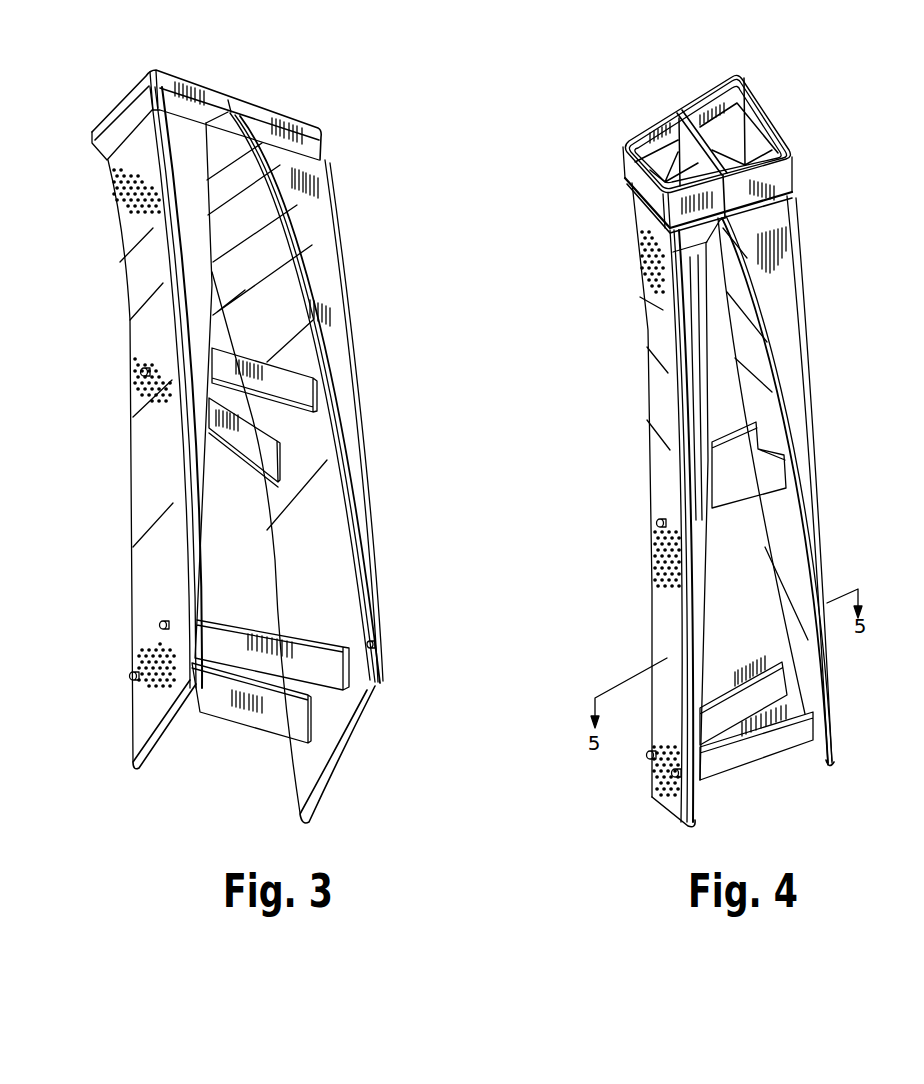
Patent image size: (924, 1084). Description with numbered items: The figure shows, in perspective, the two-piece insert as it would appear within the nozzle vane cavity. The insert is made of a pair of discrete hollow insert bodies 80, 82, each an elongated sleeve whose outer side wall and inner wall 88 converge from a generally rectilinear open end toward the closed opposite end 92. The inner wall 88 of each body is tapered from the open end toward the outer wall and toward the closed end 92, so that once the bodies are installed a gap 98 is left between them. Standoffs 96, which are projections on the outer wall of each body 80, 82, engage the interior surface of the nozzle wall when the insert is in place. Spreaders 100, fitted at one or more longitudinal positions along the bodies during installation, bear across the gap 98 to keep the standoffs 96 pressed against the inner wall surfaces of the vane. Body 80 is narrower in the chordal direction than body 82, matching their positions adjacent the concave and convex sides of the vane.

In FIG. 3, the insert body 80 is at (145, 326).
In FIG. 4, the insert body 80 is at (652, 332).
In FIG. 3, the insert body 82 is at (325, 258).
In FIG. 4, the insert body 82 is at (783, 318).
In FIG. 3, the inner wall 88 is at (325, 492).
In FIG. 4, the inner wall 88 is at (771, 517).
In FIG. 3, the closed opposite end 92 is at (352, 735).
In FIG. 4, the closed opposite end 92 is at (663, 805).
In FIG. 3, the standoffs 96 is at (160, 624).
In FIG. 4, the standoffs 96 is at (655, 524).
In FIG. 3, the gap 98 is at (238, 520).
In FIG. 4, the gap 98 is at (740, 600).
In FIG. 3, the spreaders 100 is at (298, 397).
In FIG. 4, the spreaders 100 is at (720, 488).